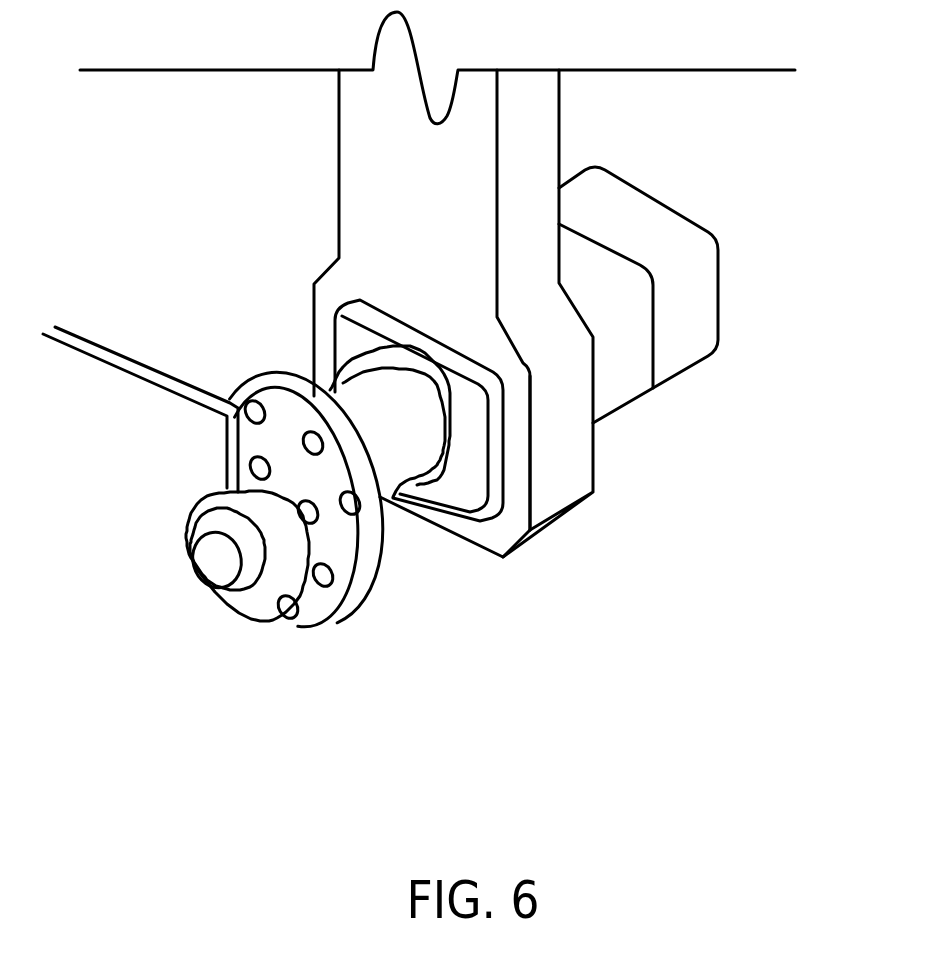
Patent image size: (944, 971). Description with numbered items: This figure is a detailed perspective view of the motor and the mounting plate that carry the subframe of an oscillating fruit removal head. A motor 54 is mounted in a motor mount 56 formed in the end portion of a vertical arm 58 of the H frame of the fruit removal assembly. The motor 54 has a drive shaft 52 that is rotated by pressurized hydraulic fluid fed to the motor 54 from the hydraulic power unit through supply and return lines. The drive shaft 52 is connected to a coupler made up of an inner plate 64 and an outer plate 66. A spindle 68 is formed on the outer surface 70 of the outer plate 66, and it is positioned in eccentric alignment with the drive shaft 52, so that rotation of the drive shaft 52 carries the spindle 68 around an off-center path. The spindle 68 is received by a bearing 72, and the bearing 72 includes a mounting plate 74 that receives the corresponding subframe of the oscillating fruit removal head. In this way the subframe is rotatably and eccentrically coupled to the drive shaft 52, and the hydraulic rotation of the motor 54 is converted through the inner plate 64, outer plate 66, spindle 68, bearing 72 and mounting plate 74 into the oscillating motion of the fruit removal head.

The drive shaft 52 is at (407, 468).
The motor 54 is at (613, 355).
The motor mount 56 is at (552, 465).
The vertical arm 58 is at (528, 115).
The inner plate 64 is at (380, 543).
The outer plate 66 is at (355, 552).
The spindle 68 is at (213, 565).
The outer surface 70 is at (228, 398).
The bearing 72 is at (222, 500).
The mounting plate 74 is at (312, 612).